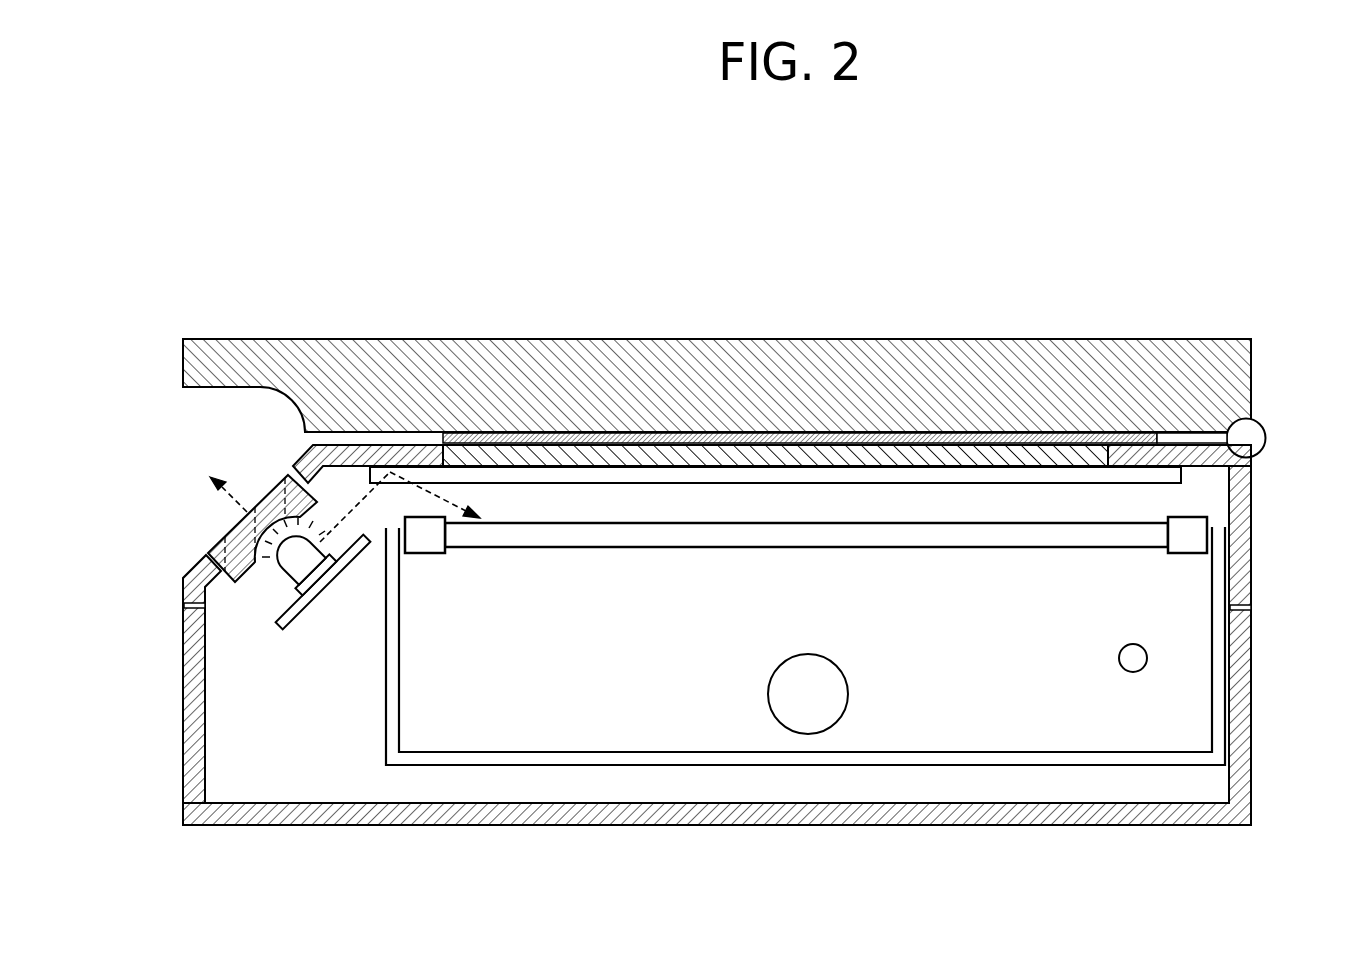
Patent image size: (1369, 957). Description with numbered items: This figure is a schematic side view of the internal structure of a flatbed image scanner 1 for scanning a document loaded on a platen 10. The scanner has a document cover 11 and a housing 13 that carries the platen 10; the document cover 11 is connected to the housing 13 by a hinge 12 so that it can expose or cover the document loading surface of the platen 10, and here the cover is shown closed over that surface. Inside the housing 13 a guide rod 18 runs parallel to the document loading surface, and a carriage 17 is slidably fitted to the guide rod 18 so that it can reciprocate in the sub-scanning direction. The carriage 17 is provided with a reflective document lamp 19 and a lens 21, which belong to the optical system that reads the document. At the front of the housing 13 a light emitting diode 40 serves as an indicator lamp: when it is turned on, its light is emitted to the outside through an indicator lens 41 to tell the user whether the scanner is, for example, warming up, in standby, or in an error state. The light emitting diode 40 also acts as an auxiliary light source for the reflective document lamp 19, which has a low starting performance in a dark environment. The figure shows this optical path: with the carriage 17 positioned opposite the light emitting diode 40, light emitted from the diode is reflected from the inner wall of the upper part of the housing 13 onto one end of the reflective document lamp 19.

The image scanner 1 is at (843, 218).
The platen 10 is at (1173, 475).
The document cover 11 is at (690, 338).
The hinge 12 is at (1267, 428).
The housing 13 is at (680, 827).
The carriage 17 is at (530, 767).
The guide rod 18 is at (1132, 672).
The reflective document lamp 19 is at (545, 523).
The lens 21 is at (807, 734).
The light emitting diode (LED) 40 is at (282, 577).
The indicator lens 41 is at (222, 537).